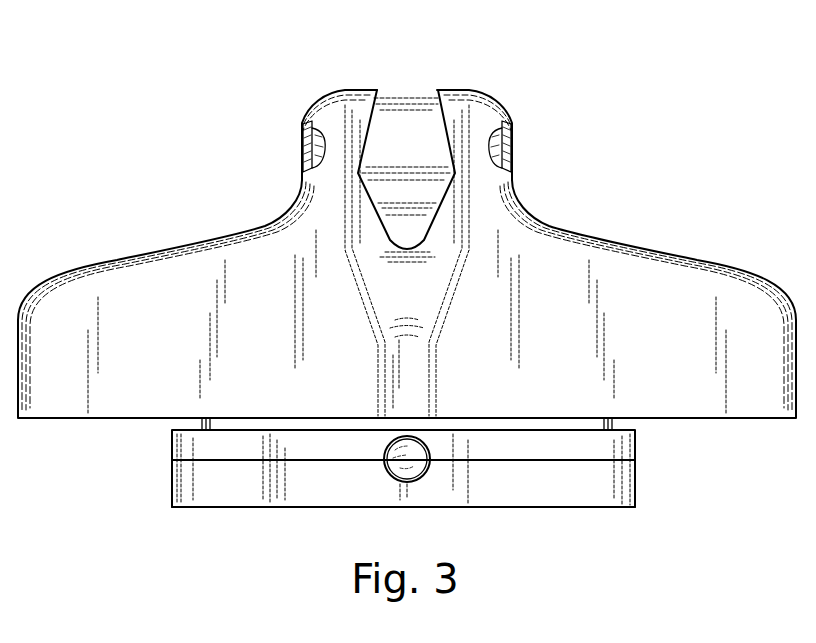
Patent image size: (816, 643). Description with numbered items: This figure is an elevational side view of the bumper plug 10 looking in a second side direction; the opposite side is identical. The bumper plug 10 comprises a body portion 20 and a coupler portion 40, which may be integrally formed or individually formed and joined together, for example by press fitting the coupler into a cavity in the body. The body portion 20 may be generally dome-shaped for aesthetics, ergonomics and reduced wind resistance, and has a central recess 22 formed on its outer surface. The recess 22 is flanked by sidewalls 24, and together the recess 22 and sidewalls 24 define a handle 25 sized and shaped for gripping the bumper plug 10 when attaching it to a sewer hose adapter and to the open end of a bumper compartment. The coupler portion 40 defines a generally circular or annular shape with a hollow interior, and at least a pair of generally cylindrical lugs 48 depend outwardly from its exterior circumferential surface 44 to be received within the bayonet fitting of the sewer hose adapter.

The bumper plug 10 is at (140, 131).
The body portion 20 is at (668, 247).
The recess 22 is at (395, 154).
The sidewalls 24 is at (342, 193).
The handle 25 is at (300, 66).
The coupler portion 40 is at (164, 473).
The exterior circumferential surface 44 is at (509, 509).
The lugs 48 is at (384, 468).